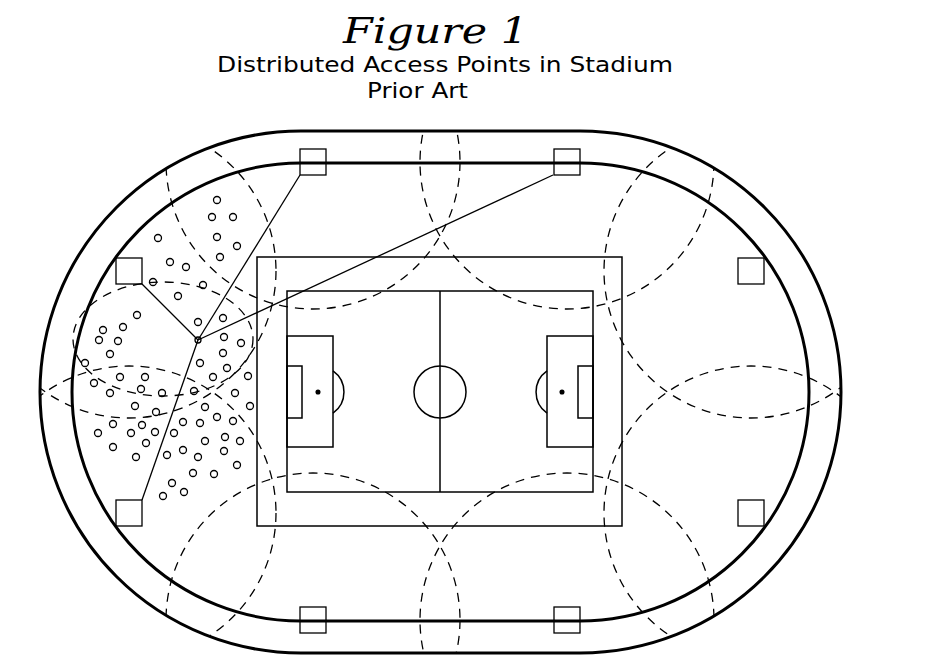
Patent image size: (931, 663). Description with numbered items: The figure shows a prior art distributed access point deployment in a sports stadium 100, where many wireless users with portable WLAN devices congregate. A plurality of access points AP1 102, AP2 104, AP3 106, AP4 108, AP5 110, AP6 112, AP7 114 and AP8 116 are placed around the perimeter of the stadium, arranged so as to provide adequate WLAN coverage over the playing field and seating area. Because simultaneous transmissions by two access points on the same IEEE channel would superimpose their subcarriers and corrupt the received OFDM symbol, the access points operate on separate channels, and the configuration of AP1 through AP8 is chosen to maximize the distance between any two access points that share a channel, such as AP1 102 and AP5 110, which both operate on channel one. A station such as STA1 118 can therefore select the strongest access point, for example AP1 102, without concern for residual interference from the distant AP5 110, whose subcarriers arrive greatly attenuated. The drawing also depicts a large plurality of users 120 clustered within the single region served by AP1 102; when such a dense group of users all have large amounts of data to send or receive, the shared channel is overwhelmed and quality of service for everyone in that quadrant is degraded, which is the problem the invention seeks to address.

The stadium with distributed access points (prior art) 100 is at (97, 129).
The access point AP1 102 is at (103, 261).
The access point AP2 104 is at (315, 196).
The access point AP3 106 is at (573, 196).
The access point AP4 108 is at (749, 308).
The access point AP5 110 is at (754, 480).
The access point AP6 112 is at (569, 590).
The access point AP7 114 is at (318, 588).
The access point AP8 116 is at (140, 544).
The station STA1 118 is at (167, 350).
The large plurality of users 120 is at (72, 348).